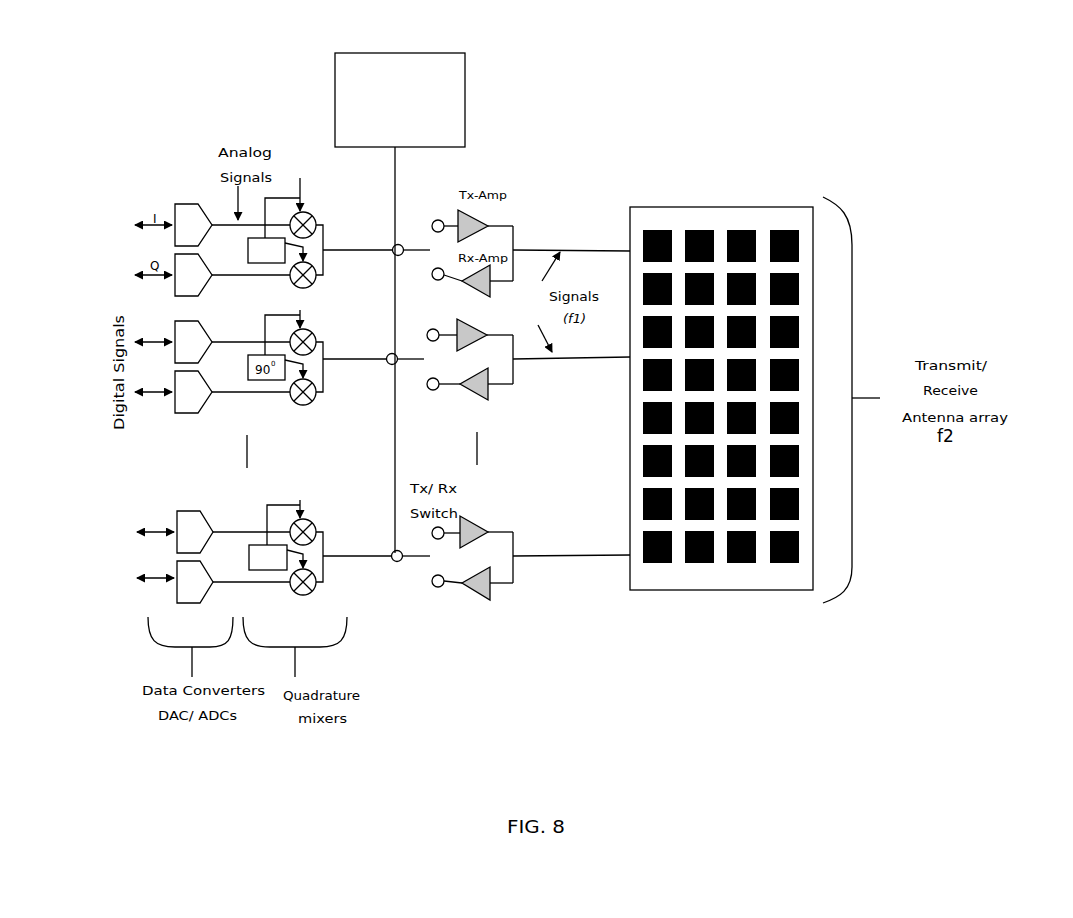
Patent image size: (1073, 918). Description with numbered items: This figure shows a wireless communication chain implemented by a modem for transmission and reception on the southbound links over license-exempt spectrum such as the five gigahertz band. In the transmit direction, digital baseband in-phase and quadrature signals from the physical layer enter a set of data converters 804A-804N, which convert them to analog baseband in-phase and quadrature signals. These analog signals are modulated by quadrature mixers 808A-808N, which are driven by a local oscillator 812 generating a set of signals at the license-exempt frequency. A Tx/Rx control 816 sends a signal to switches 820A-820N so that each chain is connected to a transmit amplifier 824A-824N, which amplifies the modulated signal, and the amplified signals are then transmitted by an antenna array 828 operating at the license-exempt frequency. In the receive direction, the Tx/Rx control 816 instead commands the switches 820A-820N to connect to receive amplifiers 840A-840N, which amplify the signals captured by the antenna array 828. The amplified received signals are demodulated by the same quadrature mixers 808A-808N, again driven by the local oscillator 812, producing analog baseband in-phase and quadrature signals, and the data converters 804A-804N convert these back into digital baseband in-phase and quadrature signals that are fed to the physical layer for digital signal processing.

The data converter (ADC/DAC) 804A is at (133, 257).
The data converter (ADC/DAC) 804N is at (130, 553).
The quadrature mixer 808A is at (330, 242).
The quadrature mixer 808N is at (317, 517).
The local oscillator (LO1) 812 is at (315, 157).
The Tx/Rx control 816 is at (465, 112).
The switch 820A is at (394, 254).
The switch 820N is at (394, 560).
The transmit amplifier (Tx-Amp) 824A is at (488, 223).
The transmit amplifier (Tx-Amp) 824N is at (495, 500).
The antenna array 828 is at (678, 207).
The receive amplifier (Rx-Amp) 840A is at (490, 285).
The receive amplifier (Rx-Amp) 840N is at (480, 580).